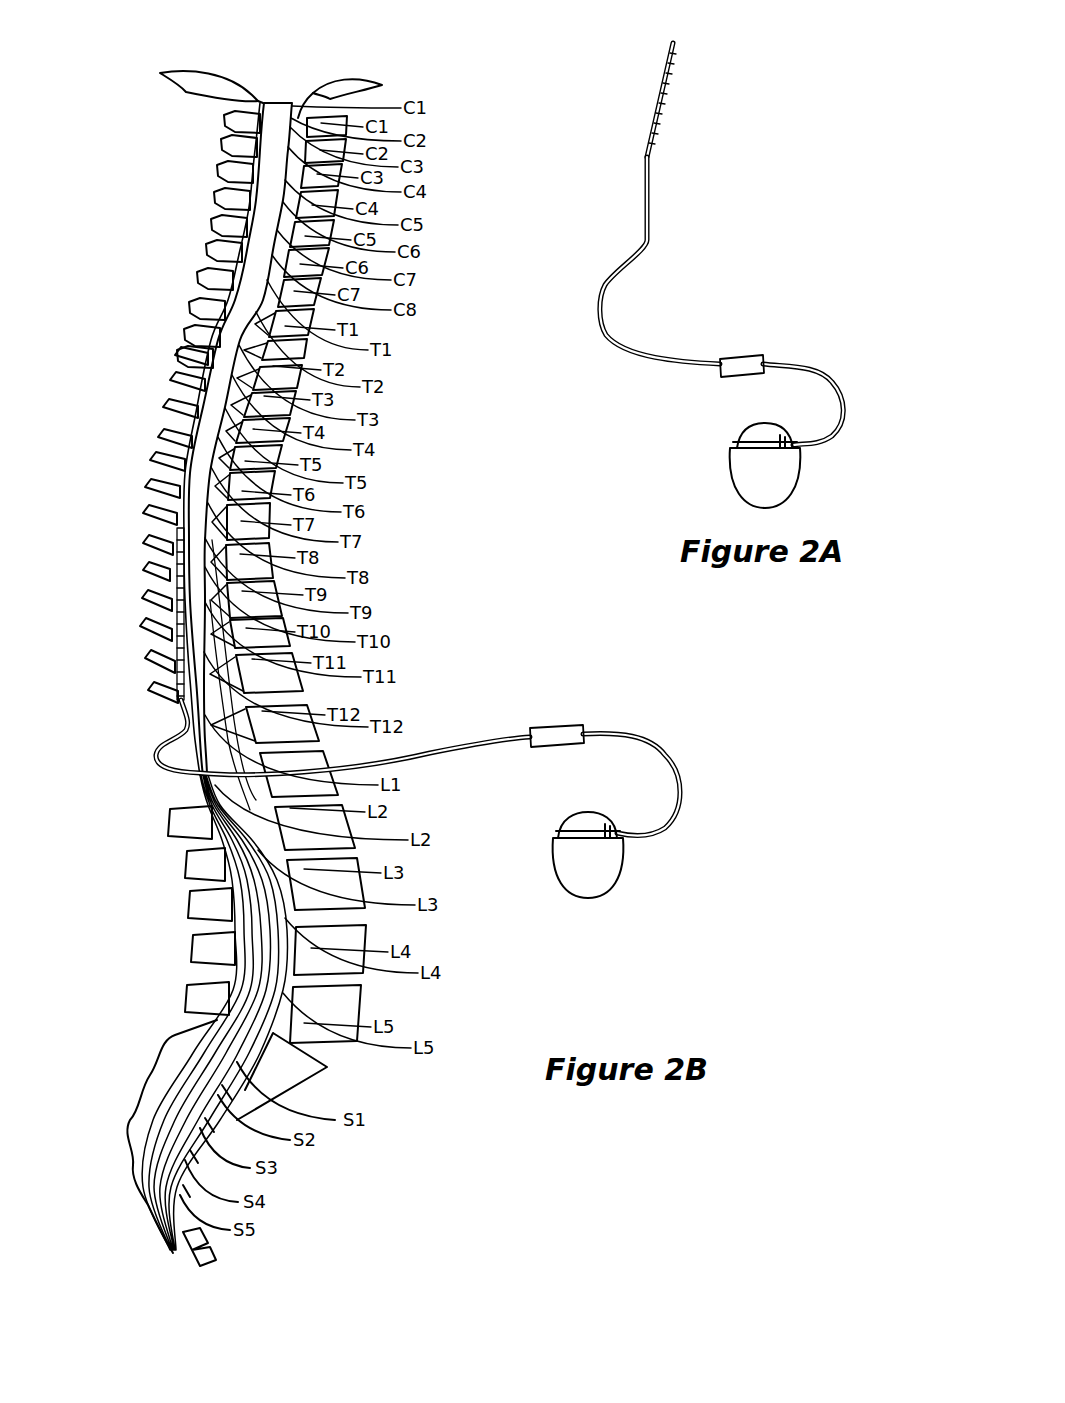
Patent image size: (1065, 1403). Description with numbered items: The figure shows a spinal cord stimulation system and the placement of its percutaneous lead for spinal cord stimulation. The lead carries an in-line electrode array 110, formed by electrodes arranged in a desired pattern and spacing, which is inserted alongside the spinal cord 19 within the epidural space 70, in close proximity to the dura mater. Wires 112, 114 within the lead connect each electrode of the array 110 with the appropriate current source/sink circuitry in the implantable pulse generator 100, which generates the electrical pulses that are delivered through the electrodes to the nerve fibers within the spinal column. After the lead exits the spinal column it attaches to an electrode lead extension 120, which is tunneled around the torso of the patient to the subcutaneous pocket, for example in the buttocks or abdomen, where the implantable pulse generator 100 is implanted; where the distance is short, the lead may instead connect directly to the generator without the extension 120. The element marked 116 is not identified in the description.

In FIG. 2B, the spinal cord 19 is at (248, 297).
In FIG. 2B, the epidural space 70 is at (183, 505).
In FIG. 2A, the implantable pulse generator 100 is at (770, 294).
In FIG. 2B, the electrode array 110 is at (140, 524).
In FIG. 2A, the electrode array 110 is at (690, 43).
In FIG. 2B, the wire 112 is at (443, 748).
In FIG. 2A, the wire 112 is at (647, 197).
In FIG. 2B, the wire 114 is at (580, 735).
In FIG. 2A, the wire 114 is at (780, 347).
In FIG. 2B, the implantable pulse generator 116 is at (587, 880).
In FIG. 2A, the implantable pulse generator 116 is at (740, 467).
In FIG. 2B, the electrode lead extension 120 is at (642, 733).
In FIG. 2A, the electrode lead extension 120 is at (807, 362).